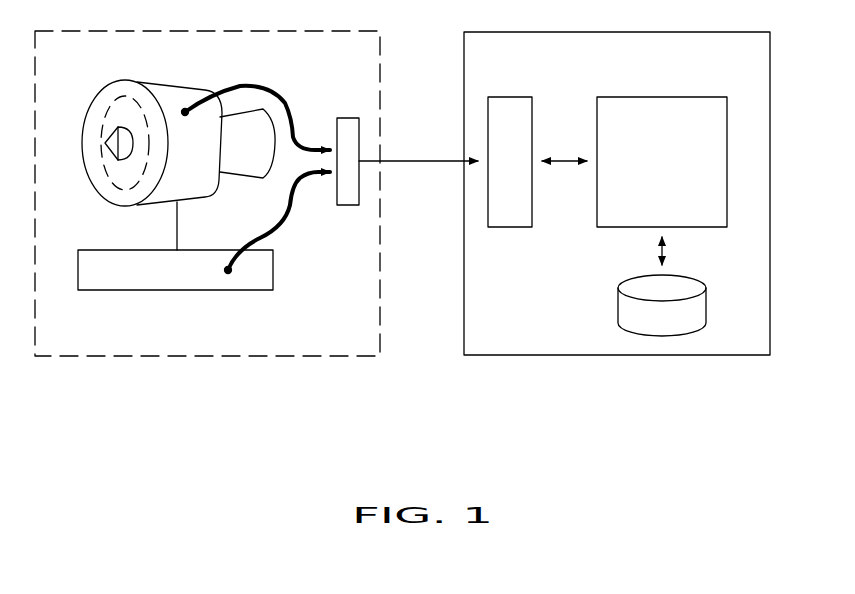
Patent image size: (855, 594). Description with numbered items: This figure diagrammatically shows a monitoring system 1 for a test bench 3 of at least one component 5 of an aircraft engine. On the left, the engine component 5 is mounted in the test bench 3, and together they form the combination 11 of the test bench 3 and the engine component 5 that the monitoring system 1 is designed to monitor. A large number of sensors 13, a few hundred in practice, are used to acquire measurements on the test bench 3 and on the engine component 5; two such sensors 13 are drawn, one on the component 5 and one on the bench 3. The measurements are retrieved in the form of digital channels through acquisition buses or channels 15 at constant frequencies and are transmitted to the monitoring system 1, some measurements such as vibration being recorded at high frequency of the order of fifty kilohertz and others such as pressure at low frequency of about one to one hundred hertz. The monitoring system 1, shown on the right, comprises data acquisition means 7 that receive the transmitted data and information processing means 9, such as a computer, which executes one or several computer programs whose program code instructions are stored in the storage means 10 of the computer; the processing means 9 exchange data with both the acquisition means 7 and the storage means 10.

The monitoring system 1 is at (602, 355).
The test bench 3 is at (143, 285).
The engine component 5 is at (97, 97).
The data acquisition means 7 is at (500, 97).
The information processing means 9 is at (650, 97).
The storage means 10 is at (617, 300).
The combination of the test bench and the engine component 11 is at (148, 356).
The sensors 13 is at (185, 112).
The acquisition buses or channels 15 is at (345, 205).